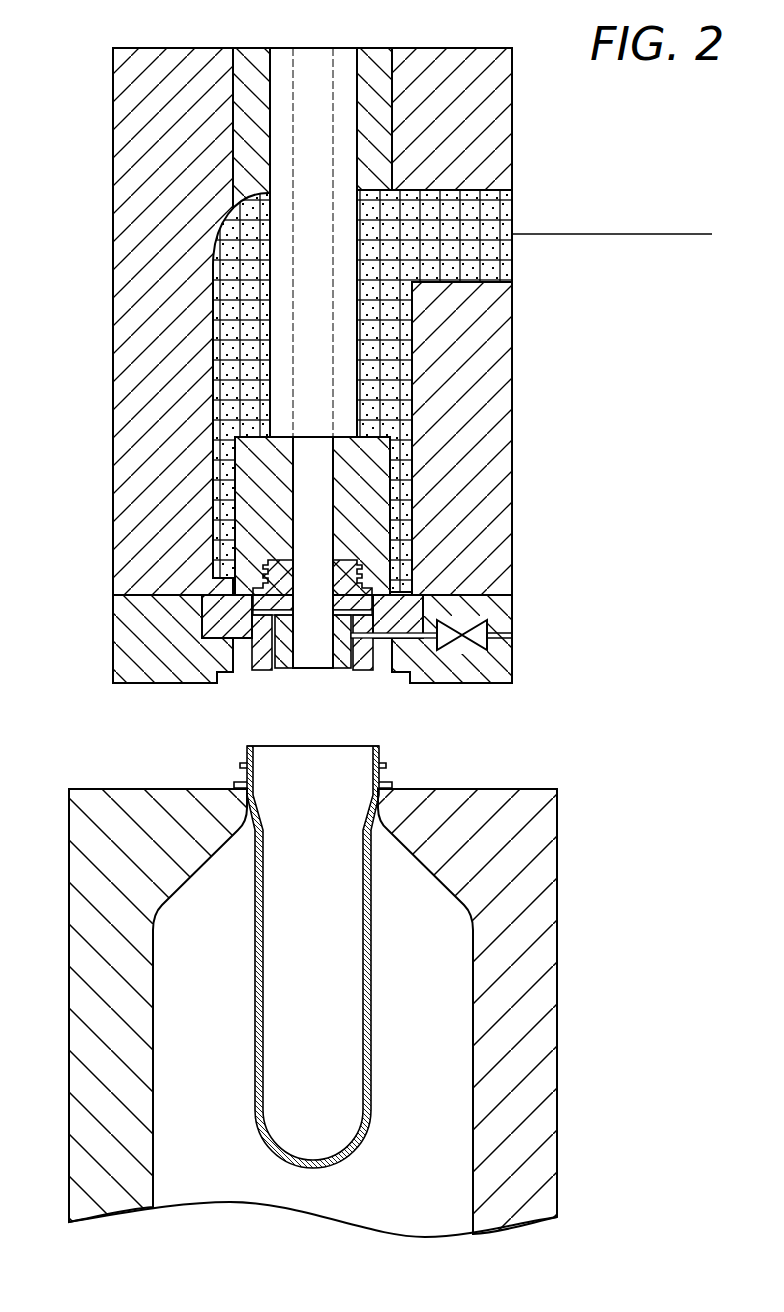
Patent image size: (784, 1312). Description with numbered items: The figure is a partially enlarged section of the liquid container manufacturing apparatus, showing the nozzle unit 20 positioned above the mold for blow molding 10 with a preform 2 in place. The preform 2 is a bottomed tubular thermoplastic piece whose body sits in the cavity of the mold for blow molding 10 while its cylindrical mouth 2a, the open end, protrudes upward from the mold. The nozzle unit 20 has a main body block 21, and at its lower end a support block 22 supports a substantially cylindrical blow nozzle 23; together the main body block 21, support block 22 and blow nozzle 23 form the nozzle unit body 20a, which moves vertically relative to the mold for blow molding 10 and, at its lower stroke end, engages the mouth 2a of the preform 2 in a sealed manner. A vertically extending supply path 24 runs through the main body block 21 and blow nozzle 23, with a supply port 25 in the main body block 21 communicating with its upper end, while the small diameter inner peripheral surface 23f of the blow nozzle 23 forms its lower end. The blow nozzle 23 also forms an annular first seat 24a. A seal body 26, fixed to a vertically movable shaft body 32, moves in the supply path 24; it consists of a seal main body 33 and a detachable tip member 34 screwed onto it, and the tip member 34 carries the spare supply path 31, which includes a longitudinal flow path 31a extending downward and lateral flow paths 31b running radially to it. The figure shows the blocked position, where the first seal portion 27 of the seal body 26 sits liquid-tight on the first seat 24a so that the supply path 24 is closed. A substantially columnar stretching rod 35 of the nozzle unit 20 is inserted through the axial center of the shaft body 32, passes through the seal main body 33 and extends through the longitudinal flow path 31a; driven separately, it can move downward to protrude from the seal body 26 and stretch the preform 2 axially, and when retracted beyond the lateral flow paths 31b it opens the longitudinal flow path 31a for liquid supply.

The preform 2 is at (341, 953).
The mouth 2a is at (383, 750).
The mold for blow molding 10 is at (560, 985).
The nozzle unit 20 is at (363, 396).
The nozzle unit body 20a is at (108, 462).
The main body block 21 is at (153, 327).
The support block 22 is at (150, 638).
The blow nozzle 23 is at (210, 608).
The small diameter inner peripheral surface 23f is at (345, 640).
The supply path 24 is at (412, 368).
The first seat 24a is at (265, 590).
The supply port 25 is at (480, 282).
The seal body 26 is at (233, 460).
The first seal portion 27 is at (255, 605).
The spare supply path 31 is at (314, 680).
The longitudinal flow path 31a is at (298, 668).
The lateral flow path 31b is at (264, 670).
The shaft body 32 is at (262, 254).
The seal main body 33 is at (368, 462).
The tip member 34 is at (345, 598).
The stretching rod 35 is at (313, 513).